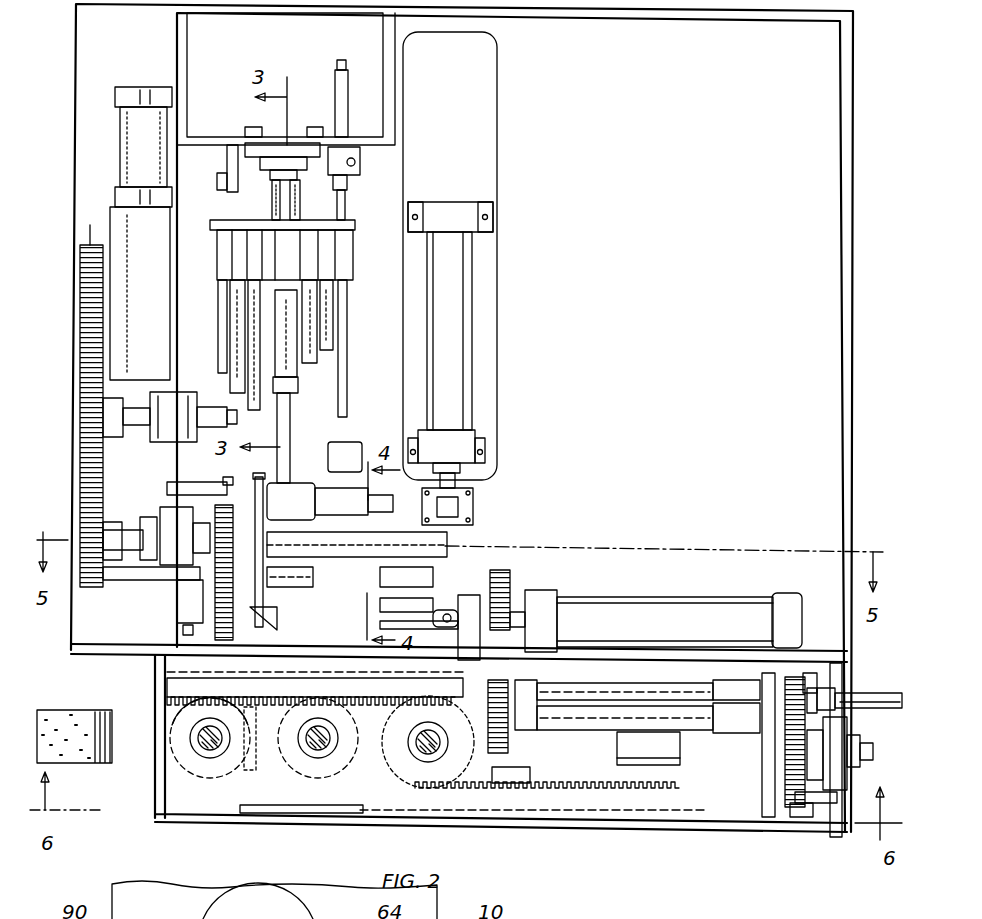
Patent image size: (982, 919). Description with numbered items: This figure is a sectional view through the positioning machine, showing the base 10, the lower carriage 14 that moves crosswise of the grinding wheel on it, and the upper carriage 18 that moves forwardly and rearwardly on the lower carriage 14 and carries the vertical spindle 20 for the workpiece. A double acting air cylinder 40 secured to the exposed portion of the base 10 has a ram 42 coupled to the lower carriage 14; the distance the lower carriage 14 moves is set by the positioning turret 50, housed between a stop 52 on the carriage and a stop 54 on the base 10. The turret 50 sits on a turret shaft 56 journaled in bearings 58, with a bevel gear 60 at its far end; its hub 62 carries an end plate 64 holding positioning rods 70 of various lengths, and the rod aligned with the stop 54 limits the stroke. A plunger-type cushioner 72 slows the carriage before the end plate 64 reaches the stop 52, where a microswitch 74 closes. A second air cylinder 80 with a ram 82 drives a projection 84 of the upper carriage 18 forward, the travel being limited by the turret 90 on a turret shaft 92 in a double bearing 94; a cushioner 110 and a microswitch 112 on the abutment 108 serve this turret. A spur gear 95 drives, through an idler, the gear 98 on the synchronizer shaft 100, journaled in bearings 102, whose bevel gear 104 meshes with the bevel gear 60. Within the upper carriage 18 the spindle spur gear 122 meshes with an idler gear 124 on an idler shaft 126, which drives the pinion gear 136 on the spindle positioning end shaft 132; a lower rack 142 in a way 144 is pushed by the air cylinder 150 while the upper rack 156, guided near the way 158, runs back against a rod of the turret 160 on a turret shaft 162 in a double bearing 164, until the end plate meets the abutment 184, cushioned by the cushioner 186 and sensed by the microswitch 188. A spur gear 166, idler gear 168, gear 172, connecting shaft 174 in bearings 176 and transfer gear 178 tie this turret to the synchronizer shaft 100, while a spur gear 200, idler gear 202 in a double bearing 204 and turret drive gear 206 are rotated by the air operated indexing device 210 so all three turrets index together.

The base 10 is at (487, 112).
The lower carriage 14 is at (697, 193).
The upper carriage 18 is at (675, 838).
The spindle 20 is at (193, 740).
The double acting air cylinder 40 is at (470, 265).
The ram 42 is at (446, 459).
The positioning turret 50 is at (358, 305).
The stop 52 is at (232, 157).
The stop 54 is at (438, 490).
The turret shaft 56 is at (275, 204).
The bearings 58 is at (287, 147).
The bevel gear 60 is at (280, 618).
The hub 62 is at (330, 385).
The end plate 64 is at (357, 227).
The positioning rod 70 is at (350, 392).
The plunger-type cushioner 72 is at (348, 87).
The microswitch 74 is at (217, 180).
The double acting air cylinder 80 is at (735, 602).
The ram 82 is at (527, 617).
The projection 84 is at (470, 600).
The turret 90 is at (345, 460).
The turret shaft 92 is at (242, 530).
The double bearing 94 is at (150, 525).
The spur gear 95 is at (172, 510).
The gear 98 is at (200, 647).
The synchronizer shaft 100 is at (183, 628).
The bearings 102 is at (188, 608).
The bevel gear 104 is at (224, 645).
The abutment 108 is at (180, 488).
The plunger type cushioner 110 is at (118, 580).
The microswitch 112 is at (226, 485).
The spur gear 122 is at (205, 772).
The idler gear 124 is at (290, 790).
The idler shaft 126 is at (298, 740).
The spindle positioning end shaft 132 is at (345, 742).
The pinion gear 136 is at (402, 772).
The rack 142 is at (600, 803).
The way 144 is at (350, 820).
The double acting air cylinder 150 is at (665, 783).
The upper rack 156 is at (315, 688).
The way 158 is at (593, 662).
The turret 160 is at (653, 682).
The turret shaft 162 is at (807, 750).
The double bearing 164 is at (890, 732).
The spur gear 166 is at (790, 762).
The idler gear 168 is at (787, 800).
The gear 172 is at (790, 677).
The connecting shaft 174 is at (600, 713).
The bearings 176 is at (525, 728).
The transfer gear 178 is at (517, 753).
The abutment 184 is at (812, 812).
The plunger-type cushioner 186 is at (883, 697).
The microswitch 188 is at (813, 808).
The spur gear 200 is at (80, 590).
The idler gear 202 is at (105, 355).
The double bearing 204 is at (190, 392).
The turret drive gear 206 is at (90, 225).
The air operated indexing device 210 is at (150, 274).